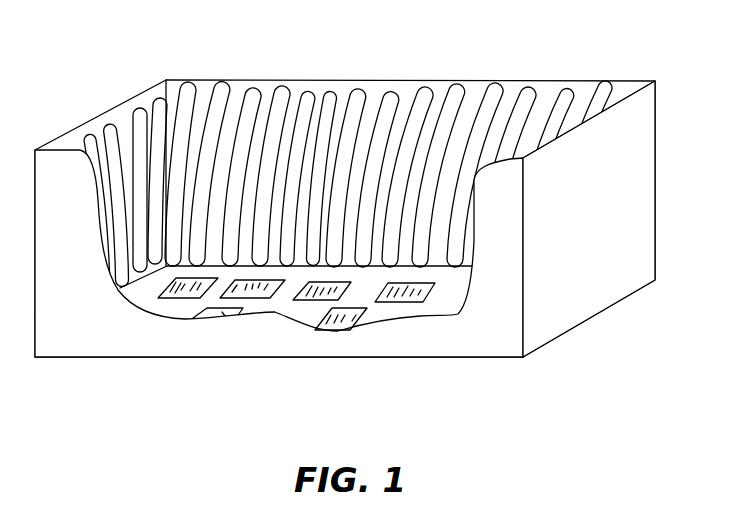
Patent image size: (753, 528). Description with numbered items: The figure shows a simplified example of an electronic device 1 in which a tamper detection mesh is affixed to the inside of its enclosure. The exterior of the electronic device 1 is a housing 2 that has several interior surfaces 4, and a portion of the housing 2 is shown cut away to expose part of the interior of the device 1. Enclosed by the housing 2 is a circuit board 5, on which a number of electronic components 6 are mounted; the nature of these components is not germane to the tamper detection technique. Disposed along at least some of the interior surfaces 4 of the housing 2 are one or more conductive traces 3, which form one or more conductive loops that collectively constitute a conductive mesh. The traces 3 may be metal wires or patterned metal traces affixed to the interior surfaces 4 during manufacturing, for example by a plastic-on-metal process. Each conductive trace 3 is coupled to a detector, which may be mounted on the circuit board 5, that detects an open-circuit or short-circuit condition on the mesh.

The electronic device 1 is at (614, 44).
The housing 2 is at (656, 225).
The conductive trace 3 is at (226, 97).
The interior surface 4 is at (120, 118).
The circuit board 5 is at (447, 311).
The electronic component 6 is at (360, 318).